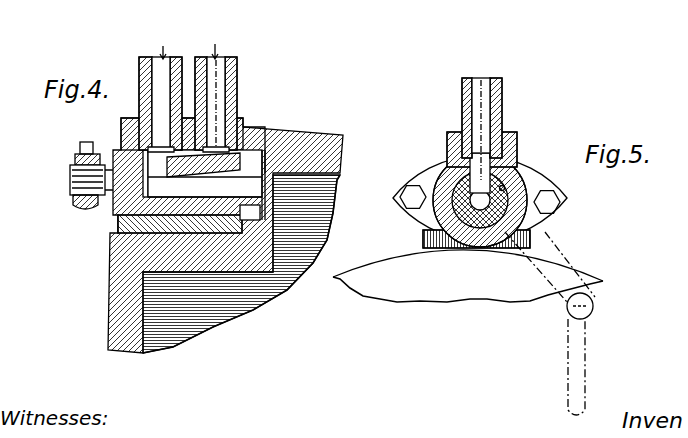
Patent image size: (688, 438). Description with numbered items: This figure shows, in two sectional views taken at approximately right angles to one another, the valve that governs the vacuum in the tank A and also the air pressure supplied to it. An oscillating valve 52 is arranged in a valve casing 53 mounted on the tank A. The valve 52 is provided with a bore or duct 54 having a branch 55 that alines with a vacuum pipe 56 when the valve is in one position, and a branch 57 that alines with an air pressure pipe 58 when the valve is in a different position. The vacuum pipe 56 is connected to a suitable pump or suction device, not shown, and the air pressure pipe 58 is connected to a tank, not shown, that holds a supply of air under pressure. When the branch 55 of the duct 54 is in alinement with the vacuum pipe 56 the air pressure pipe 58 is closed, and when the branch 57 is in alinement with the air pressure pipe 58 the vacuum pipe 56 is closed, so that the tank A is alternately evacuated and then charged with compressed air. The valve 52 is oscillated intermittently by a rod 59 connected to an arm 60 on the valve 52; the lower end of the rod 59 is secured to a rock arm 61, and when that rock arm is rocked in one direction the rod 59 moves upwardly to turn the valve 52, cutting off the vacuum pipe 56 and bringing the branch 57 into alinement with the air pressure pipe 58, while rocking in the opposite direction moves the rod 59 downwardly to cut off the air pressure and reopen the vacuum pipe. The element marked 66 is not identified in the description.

In FIG. 4, the oscillating valve 52 is at (117, 218).
In FIG. 5, the oscillating valve 52 is at (452, 203).
In FIG. 4, the valve casing 53 is at (245, 127).
In FIG. 5, the valve casing 53 is at (527, 222).
In FIG. 4, the bore or duct 54 is at (252, 187).
In FIG. 5, the bore or duct 54 is at (480, 205).
In FIG. 4, the branch 55 is at (155, 170).
In FIG. 5, the branch 55 is at (480, 177).
In FIG. 4, the vacuum pipe 56 is at (146, 62).
In FIG. 5, the vacuum pipe 56 is at (490, 108).
In FIG. 4, the branch 57 is at (225, 235).
In FIG. 4, the air pressure pipe 58 is at (213, 85).
In FIG. 5, the rod 59 is at (585, 376).
In FIG. 4, the arm 60 is at (74, 203).
In FIG. 5, the rock arm 61 is at (503, 188).
In FIG. 5, the pin 66 is at (592, 300).
In FIG. 4, the closed tank or casing A is at (225, 312).
In FIG. 5, the closed tank or casing A is at (510, 296).